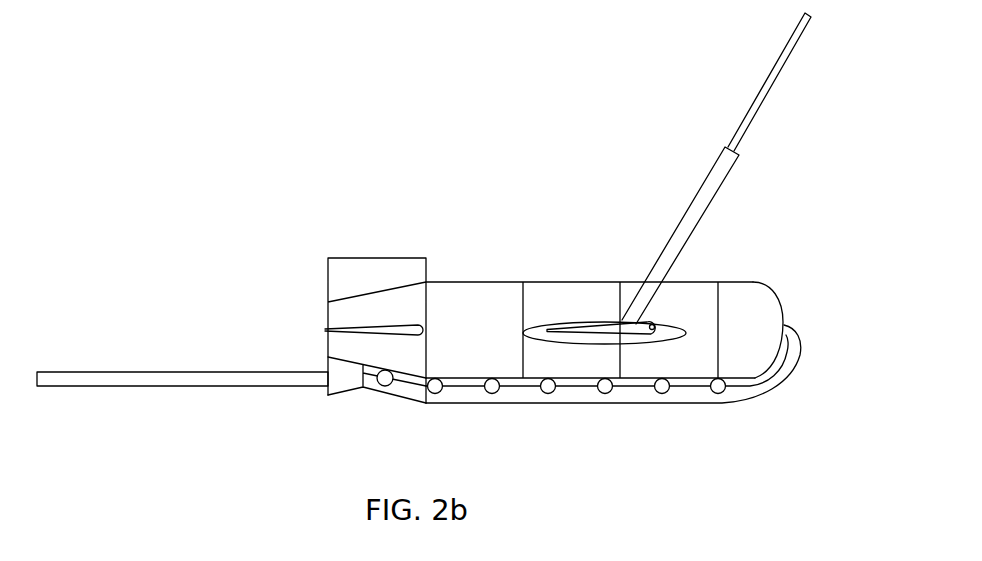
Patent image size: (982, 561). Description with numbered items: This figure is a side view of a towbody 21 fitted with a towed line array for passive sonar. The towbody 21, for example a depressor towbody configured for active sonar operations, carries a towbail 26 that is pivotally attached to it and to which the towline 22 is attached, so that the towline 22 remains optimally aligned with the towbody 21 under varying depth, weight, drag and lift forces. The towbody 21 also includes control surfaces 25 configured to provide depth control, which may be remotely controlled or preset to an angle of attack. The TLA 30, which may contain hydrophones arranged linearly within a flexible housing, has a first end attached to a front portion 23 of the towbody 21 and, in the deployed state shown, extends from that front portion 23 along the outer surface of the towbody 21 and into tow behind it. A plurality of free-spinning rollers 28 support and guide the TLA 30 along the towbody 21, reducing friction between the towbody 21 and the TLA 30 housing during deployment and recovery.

The towbody 21 is at (542, 282).
The towline 22 is at (757, 95).
The front portion 23 is at (779, 322).
The control surfaces 25 is at (637, 331).
The towbail 26 is at (721, 187).
The rollers 28 is at (383, 386).
The TLA 30 is at (767, 392).